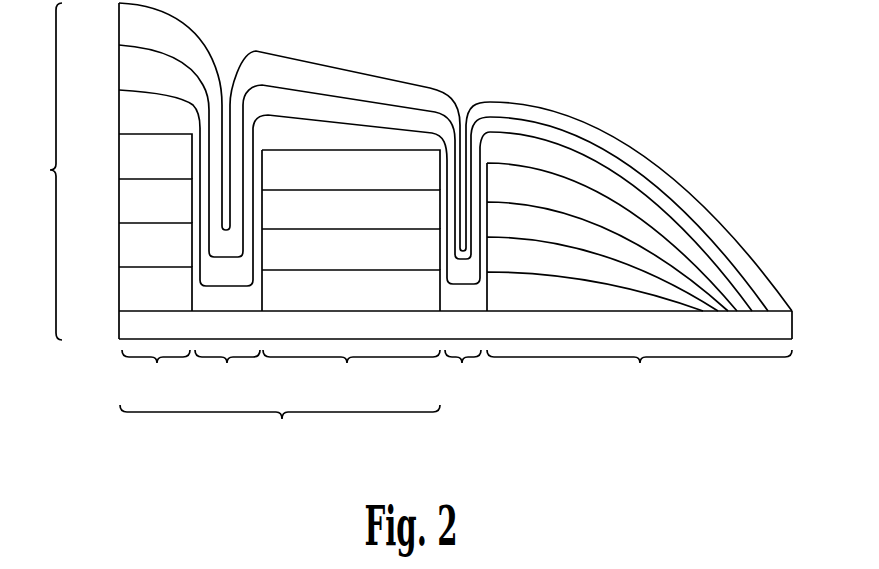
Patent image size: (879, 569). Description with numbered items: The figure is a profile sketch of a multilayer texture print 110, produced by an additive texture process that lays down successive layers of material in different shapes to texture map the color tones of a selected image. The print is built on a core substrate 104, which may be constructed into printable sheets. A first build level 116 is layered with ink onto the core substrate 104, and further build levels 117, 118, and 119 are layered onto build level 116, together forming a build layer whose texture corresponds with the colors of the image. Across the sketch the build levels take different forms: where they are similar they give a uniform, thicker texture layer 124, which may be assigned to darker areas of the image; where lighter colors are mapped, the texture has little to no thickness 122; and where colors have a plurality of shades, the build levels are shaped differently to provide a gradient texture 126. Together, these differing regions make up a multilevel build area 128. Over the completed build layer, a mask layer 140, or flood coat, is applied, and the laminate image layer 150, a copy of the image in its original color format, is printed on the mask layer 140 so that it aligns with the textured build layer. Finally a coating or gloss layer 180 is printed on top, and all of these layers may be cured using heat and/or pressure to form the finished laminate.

The core substrate 104 is at (128, 327).
The multilayer texture print 110 is at (44, 171).
The build level 116 is at (128, 292).
The build level 117 is at (128, 247).
The build level 118 is at (128, 204).
The build level 119 is at (128, 162).
The texture with little to no thickness 122 is at (338, 375).
The thicker texture layer 124 is at (281, 375).
The gradient texture 126 is at (639, 375).
The multilevel build area 128 is at (280, 430).
The mask layer 140 is at (128, 119).
The laminate image layer 150 is at (128, 74).
The gloss layer 180 is at (128, 27).